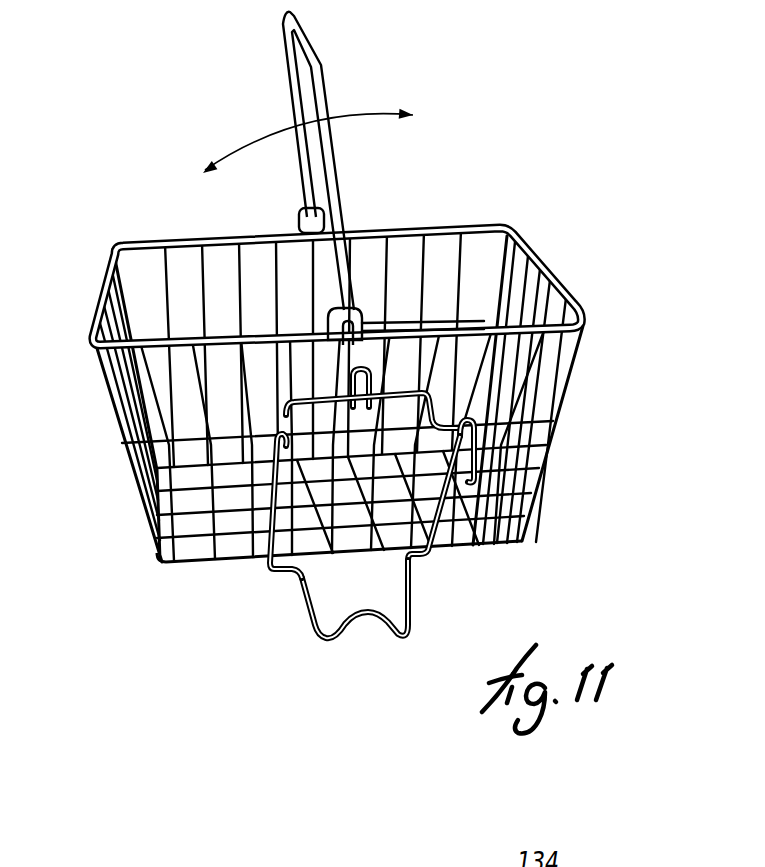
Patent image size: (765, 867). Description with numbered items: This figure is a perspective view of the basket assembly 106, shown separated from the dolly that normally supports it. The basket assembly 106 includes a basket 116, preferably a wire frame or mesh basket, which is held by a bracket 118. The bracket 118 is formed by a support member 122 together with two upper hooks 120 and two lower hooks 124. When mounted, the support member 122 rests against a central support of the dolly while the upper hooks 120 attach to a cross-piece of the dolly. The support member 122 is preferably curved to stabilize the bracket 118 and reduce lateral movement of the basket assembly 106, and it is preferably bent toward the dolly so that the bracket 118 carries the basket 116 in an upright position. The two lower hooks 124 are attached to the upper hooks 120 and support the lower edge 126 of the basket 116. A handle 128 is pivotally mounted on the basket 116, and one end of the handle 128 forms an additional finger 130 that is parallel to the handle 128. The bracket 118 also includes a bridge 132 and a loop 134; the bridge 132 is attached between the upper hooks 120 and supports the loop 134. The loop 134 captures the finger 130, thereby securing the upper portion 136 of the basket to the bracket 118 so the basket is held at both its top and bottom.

The basket assembly 106 is at (627, 273).
The basket 116 is at (503, 218).
The bracket 118 is at (425, 606).
The upper hooks 120 is at (530, 452).
The support member 122 is at (366, 620).
The lower hooks 124 is at (260, 573).
The lower edge 126 is at (237, 562).
The handle 128 is at (318, 72).
The finger 130 is at (328, 332).
The bridge 132 is at (470, 396).
The loop 134 is at (380, 364).
The upper portion 136 is at (580, 327).